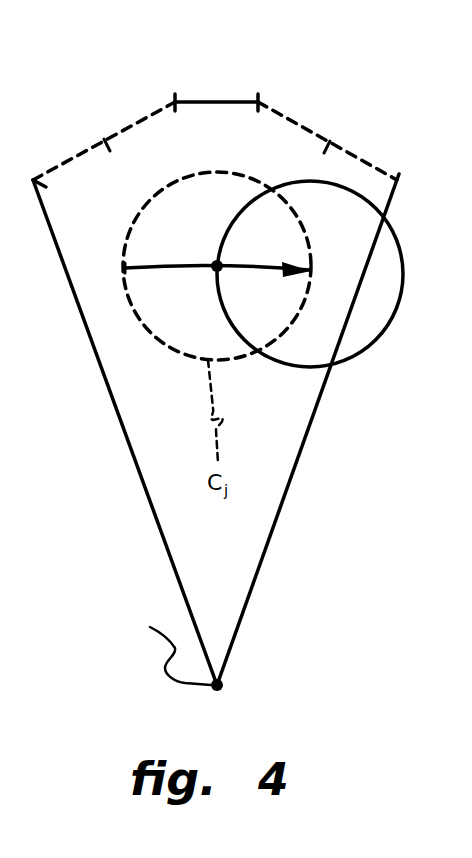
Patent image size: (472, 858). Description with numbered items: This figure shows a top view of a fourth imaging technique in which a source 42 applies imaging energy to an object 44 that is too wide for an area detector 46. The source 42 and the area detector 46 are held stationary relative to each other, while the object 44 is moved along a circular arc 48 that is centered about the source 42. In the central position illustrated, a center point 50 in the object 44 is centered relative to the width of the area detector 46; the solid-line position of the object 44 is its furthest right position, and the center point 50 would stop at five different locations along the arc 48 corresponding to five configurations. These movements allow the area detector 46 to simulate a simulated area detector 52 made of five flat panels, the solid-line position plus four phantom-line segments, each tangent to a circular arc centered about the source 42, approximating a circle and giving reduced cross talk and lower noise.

The source 42 is at (223, 685).
The object 44 is at (385, 329).
The area detector 46 is at (217, 102).
The circular arc 48 is at (265, 266).
The center point 50 is at (172, 264).
The simulated area detector 52 is at (300, 122).